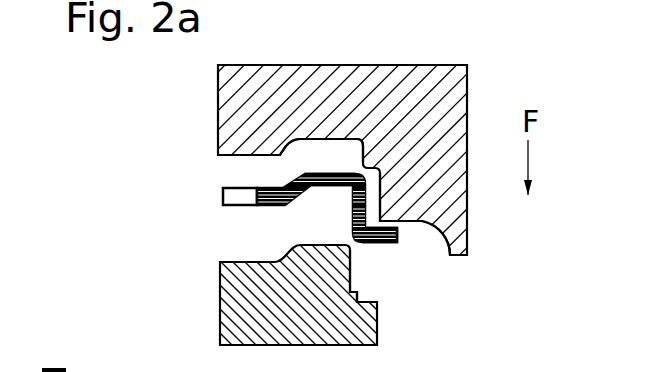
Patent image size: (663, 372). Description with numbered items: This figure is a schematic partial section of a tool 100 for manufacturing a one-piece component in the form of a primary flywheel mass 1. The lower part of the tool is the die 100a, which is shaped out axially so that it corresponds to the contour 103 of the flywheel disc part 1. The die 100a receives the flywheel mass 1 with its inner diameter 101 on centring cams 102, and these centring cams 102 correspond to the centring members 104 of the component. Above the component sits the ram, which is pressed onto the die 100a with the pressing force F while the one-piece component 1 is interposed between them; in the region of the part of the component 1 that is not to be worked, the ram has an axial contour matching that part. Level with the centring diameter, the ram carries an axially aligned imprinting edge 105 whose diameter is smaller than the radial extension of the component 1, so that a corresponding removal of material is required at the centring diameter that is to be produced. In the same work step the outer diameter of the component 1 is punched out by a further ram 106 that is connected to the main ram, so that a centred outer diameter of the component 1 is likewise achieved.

The primary flywheel mass 1 is at (248, 208).
The tool 100 is at (502, 92).
The die 100a is at (232, 324).
The inner diameter 101 is at (352, 281).
The centring cams 102 is at (415, 320).
The contour 103 is at (325, 186).
The centring members 104 is at (367, 242).
The imprinting edge 105 is at (360, 154).
The ram 106 is at (415, 215).